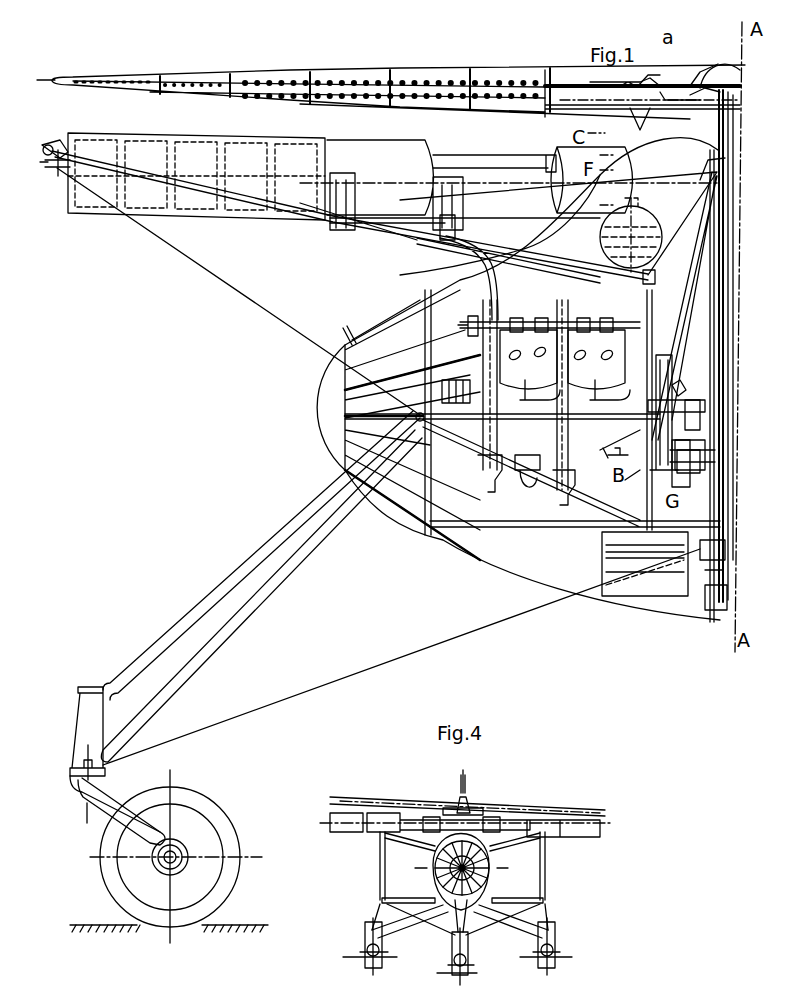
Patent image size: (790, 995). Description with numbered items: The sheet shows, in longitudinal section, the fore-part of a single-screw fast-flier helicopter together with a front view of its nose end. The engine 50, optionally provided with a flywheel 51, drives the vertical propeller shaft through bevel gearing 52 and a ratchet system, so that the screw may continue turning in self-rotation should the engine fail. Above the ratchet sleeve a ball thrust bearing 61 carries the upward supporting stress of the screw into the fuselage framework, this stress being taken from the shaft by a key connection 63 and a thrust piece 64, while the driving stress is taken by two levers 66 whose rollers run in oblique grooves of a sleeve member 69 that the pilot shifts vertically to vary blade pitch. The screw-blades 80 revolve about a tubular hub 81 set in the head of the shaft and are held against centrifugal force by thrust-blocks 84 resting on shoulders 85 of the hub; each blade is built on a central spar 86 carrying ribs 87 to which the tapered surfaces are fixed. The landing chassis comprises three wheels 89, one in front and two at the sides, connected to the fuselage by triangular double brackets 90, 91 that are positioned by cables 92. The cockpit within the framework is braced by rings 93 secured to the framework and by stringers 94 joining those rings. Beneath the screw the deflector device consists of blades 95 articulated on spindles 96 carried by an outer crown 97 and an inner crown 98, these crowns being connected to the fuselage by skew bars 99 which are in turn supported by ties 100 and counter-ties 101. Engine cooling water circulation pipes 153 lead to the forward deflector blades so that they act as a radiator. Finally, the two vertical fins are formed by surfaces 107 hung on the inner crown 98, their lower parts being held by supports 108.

In FIG. 1A, the screw-blades 80 is at (443, 82).
In FIG. 1A, the tubular hub 81 is at (684, 92).
In FIG. 1A, the thrust-blocks 84 is at (640, 80).
In FIG. 1A, the shoulders 85 is at (605, 82).
In FIG. 1A, the central spar 86 is at (360, 72).
In FIG. 1A, the ribs 87 is at (310, 72).
In FIG. 1A, the wheels 89 is at (220, 818).
In FIG. 4, the wheels 89 is at (362, 961).
In FIG. 1A, the triangular double bracket 90 is at (246, 568).
In FIG. 4, the triangular double bracket 90 is at (525, 926).
In FIG. 1A, the triangular double bracket 91 is at (276, 590).
In FIG. 4, the triangular double bracket 91 is at (486, 922).
In FIG. 1A, the cables 92 is at (432, 642).
In FIG. 4, the cables 92 is at (414, 934).
In FIG. 1A, the rings 93 is at (428, 532).
In FIG. 1A, the stringers 94 is at (354, 342).
In FIG. 1A, the deflector blades 95 is at (198, 210).
In FIG. 1A, the spindles 96 is at (108, 195).
In FIG. 1A, the outer crown 97 is at (45, 146).
In FIG. 1A, the inner crown 98 is at (532, 230).
In FIG. 1A, the skew bars 99 is at (385, 232).
In FIG. 4, the skew bars 99 is at (384, 842).
In FIG. 1A, the ties 100 is at (480, 162).
In FIG. 1A, the counter-ties 101 is at (250, 306).
In FIG. 1A, the engine cooling water circulation pipes 153 is at (556, 278).
In FIG. 1A, the engine 50 is at (544, 480).
In FIG. 1A, the flywheel 51 is at (670, 370).
In FIG. 1A, the bevel gear 52 is at (677, 392).
In FIG. 1A, the ball thrust bearing 61 is at (697, 414).
In FIG. 1A, the key connection 63 is at (688, 520).
In FIG. 1A, the thrust piece 64 is at (604, 544).
In FIG. 1A, the levers 66 is at (712, 560).
In FIG. 1A, the sleeve member 69 is at (714, 612).
In FIG. 4, the surfaces 107 is at (378, 882).
In FIG. 4, the supports 108 is at (380, 914).